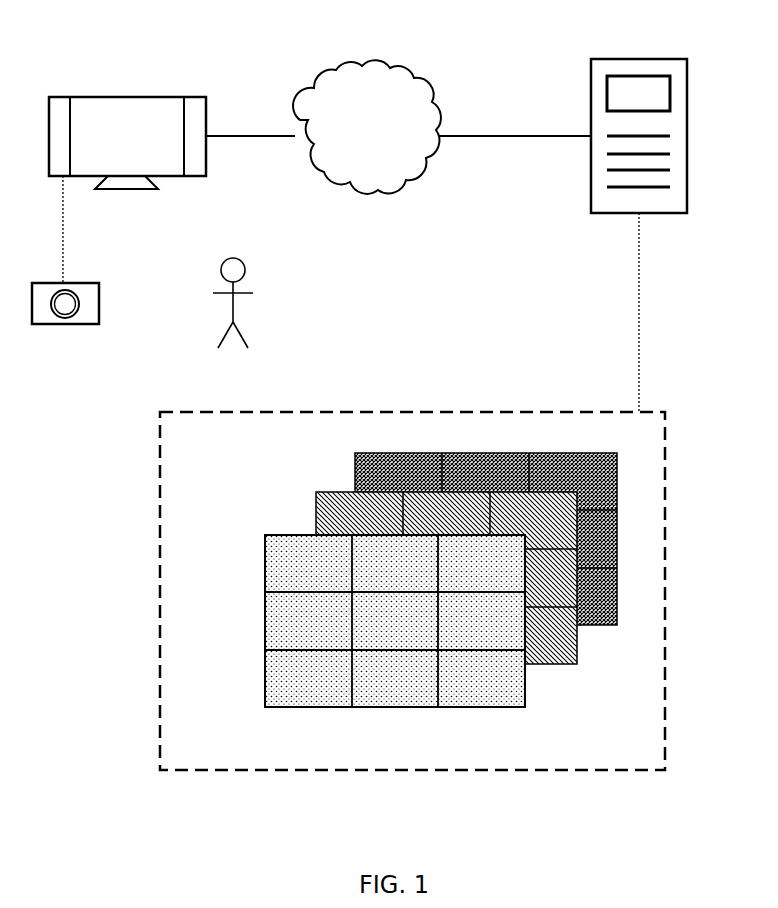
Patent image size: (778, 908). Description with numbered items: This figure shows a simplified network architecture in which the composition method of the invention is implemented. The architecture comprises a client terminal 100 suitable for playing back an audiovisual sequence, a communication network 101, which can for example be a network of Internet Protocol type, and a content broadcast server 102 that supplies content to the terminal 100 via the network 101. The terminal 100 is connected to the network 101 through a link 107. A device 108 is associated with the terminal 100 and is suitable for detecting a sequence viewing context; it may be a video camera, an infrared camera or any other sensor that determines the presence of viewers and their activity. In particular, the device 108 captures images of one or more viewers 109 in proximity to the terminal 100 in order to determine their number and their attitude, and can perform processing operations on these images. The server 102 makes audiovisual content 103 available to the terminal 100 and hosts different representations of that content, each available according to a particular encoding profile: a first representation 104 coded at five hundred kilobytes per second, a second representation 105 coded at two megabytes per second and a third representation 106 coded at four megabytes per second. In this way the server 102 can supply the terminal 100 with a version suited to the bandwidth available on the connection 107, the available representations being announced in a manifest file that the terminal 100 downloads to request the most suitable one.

The client terminal 100 is at (82, 97).
The communication network 101 is at (410, 64).
The content broadcast server 102 is at (623, 59).
The audiovisual content 103 is at (82, 283).
The first representation 104 is at (525, 707).
The second representation 105 is at (316, 510).
The third representation 106 is at (355, 468).
The link 107 is at (222, 135).
The device 108 is at (160, 468).
The viewers 109 is at (233, 258).